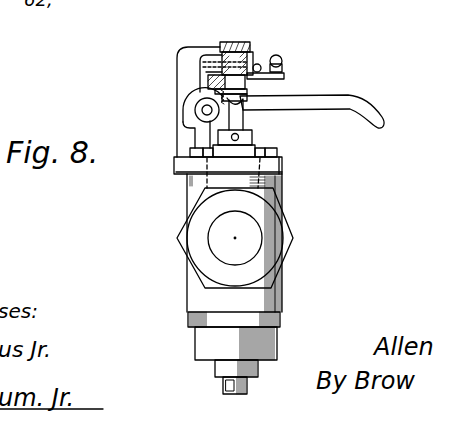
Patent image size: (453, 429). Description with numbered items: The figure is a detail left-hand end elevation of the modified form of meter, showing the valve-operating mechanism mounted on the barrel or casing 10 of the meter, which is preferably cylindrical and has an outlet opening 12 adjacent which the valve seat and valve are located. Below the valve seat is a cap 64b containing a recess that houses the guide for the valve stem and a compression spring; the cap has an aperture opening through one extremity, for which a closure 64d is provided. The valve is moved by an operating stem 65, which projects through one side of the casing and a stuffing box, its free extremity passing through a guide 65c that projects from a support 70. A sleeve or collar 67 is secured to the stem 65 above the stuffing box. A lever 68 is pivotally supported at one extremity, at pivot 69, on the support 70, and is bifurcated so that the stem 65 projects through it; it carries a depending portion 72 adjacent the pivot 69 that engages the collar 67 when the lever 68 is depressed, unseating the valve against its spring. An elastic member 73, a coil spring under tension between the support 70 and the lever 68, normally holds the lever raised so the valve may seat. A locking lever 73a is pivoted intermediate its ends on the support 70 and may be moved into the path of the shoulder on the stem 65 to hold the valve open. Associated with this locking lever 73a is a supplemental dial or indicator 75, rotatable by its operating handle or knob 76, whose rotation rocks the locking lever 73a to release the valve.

The guide 65c is at (211, 47).
The operating handle or knob 76 is at (250, 34).
The supplemental dial or indicator 75 is at (258, 56).
The locking lever 73a is at (283, 72).
The elastic member 73 is at (215, 86).
The support 70 is at (183, 97).
The pivot 69 is at (197, 113).
The operating stem 65 is at (240, 114).
The depending portion 72 is at (248, 107).
The lever 68 is at (319, 95).
The sleeve or collar 67 is at (253, 138).
The barrel or casing 10 is at (282, 293).
The outlet opening 12 is at (218, 242).
The cap 64b is at (274, 330).
The closure 64d is at (220, 392).